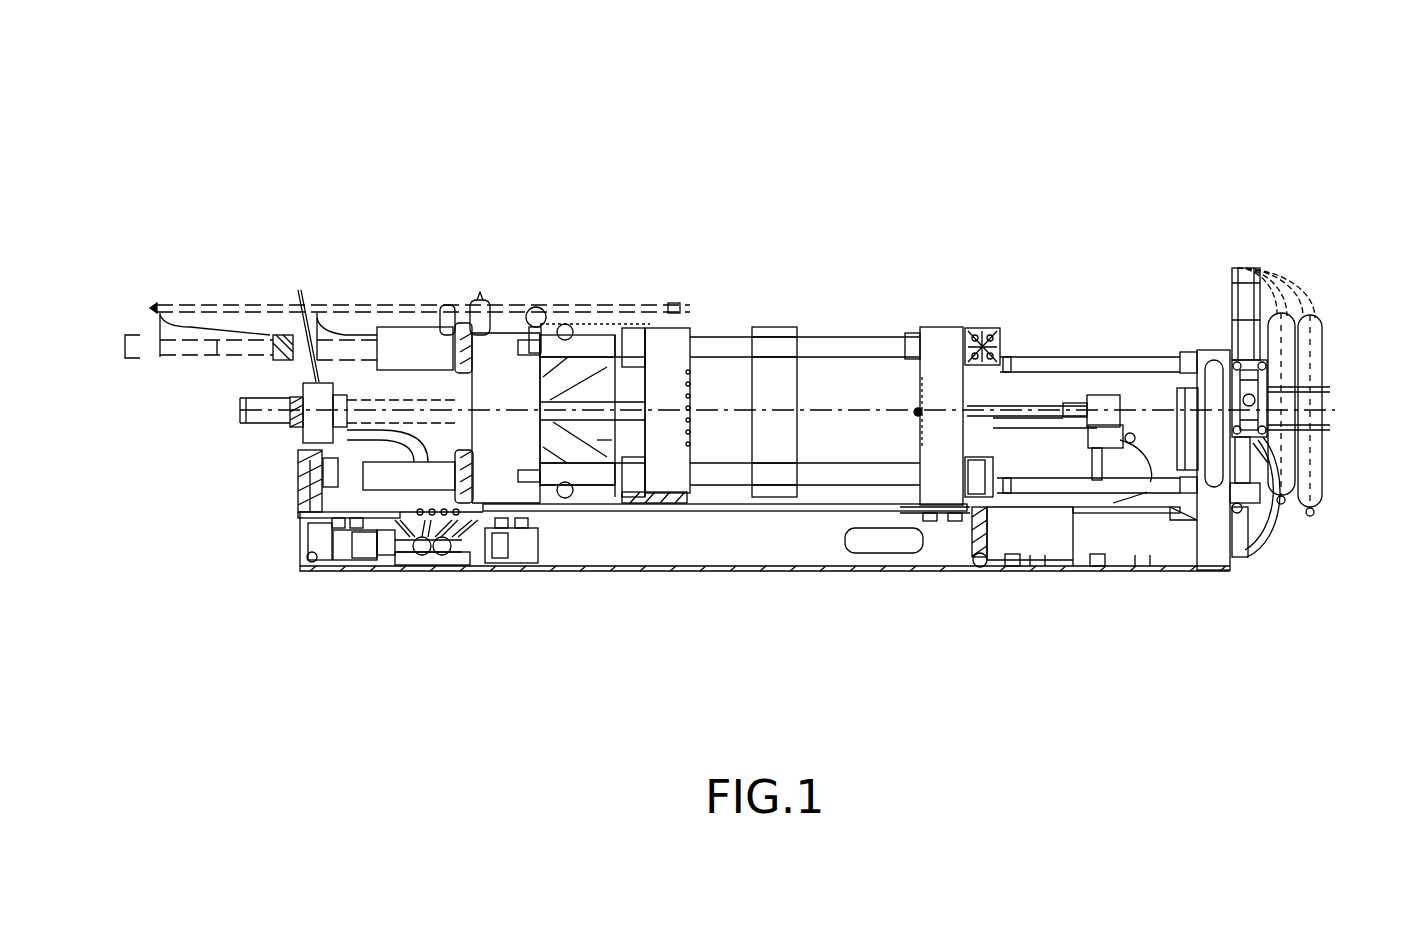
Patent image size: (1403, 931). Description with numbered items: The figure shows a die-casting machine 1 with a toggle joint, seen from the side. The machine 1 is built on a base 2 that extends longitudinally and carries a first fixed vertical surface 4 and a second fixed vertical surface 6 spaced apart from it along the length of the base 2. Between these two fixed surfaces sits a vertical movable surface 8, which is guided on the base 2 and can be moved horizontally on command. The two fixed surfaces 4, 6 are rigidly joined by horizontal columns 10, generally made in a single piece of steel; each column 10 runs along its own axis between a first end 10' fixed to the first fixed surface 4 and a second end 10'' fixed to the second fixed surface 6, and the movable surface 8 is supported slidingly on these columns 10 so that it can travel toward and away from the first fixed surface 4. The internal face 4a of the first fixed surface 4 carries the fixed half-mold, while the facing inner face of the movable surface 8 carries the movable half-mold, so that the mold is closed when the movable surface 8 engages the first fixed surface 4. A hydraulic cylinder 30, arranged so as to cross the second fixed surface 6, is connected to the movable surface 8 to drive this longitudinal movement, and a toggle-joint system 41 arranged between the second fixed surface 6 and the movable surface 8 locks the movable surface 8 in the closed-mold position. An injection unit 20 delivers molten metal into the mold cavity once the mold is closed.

The die-casting machine 1 is at (1123, 139).
The base 2 is at (597, 565).
The first fixed vertical surface 4 is at (940, 328).
The internal face of the first fixed surface 4a is at (914, 390).
The second fixed vertical surface 6 is at (445, 338).
The vertical movable surface 8 is at (662, 340).
The horizontal columns 10 is at (805, 421).
The first end of horizontal column 10' is at (951, 232).
The second end of horizontal column 10'' is at (473, 252).
The injection unit 20 is at (1299, 261).
The hydraulic cylinder 30 is at (606, 395).
The toggle-joint system 41 is at (596, 441).